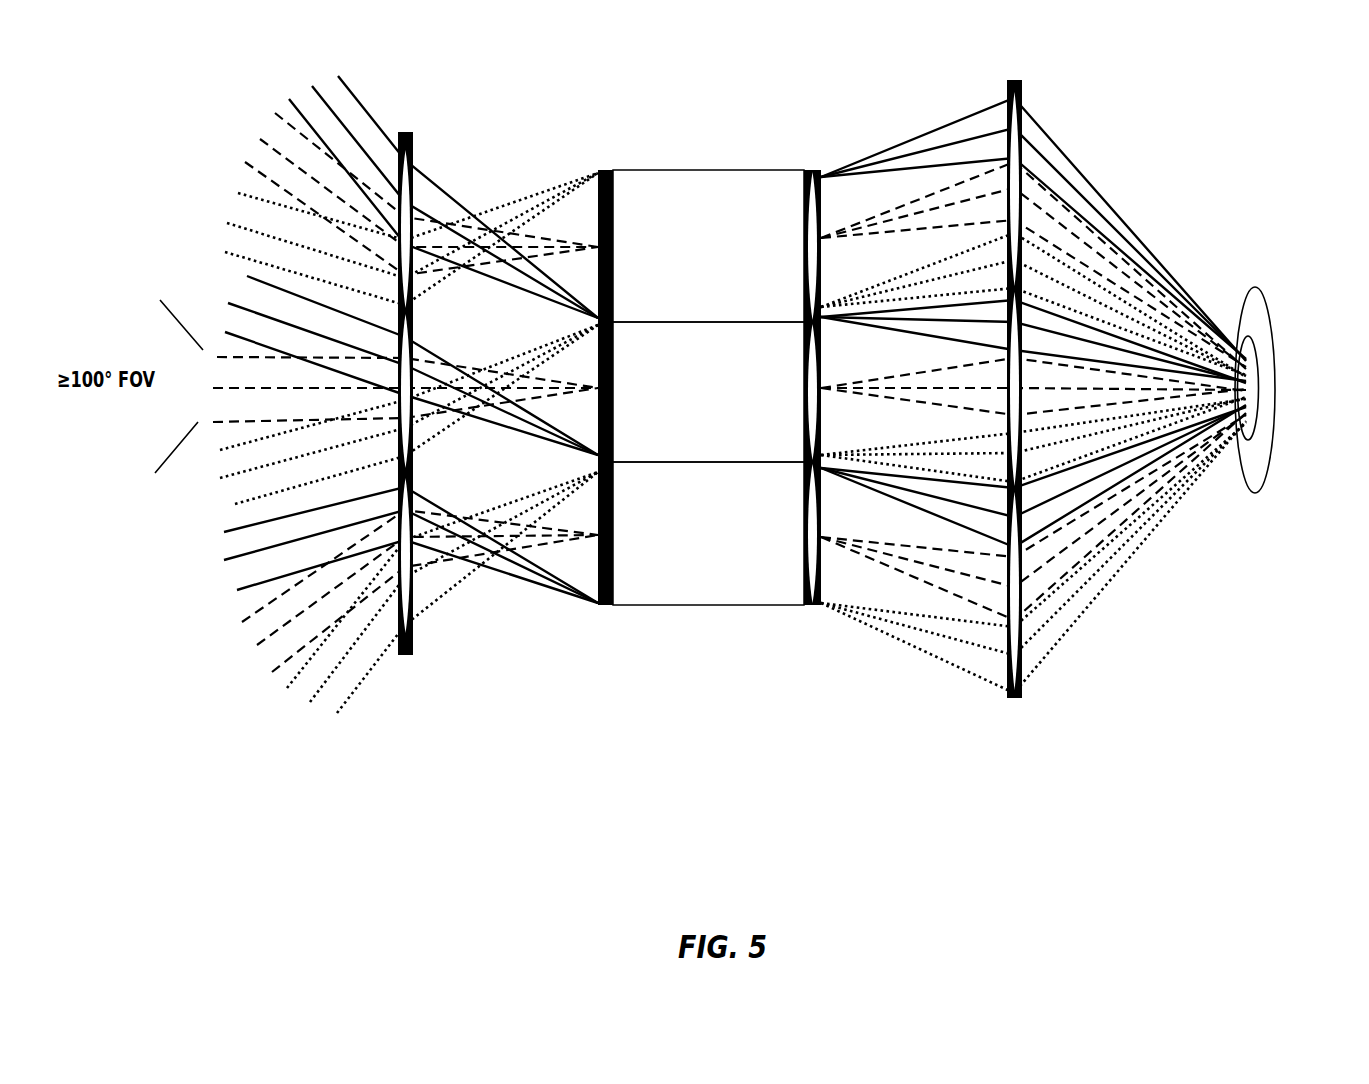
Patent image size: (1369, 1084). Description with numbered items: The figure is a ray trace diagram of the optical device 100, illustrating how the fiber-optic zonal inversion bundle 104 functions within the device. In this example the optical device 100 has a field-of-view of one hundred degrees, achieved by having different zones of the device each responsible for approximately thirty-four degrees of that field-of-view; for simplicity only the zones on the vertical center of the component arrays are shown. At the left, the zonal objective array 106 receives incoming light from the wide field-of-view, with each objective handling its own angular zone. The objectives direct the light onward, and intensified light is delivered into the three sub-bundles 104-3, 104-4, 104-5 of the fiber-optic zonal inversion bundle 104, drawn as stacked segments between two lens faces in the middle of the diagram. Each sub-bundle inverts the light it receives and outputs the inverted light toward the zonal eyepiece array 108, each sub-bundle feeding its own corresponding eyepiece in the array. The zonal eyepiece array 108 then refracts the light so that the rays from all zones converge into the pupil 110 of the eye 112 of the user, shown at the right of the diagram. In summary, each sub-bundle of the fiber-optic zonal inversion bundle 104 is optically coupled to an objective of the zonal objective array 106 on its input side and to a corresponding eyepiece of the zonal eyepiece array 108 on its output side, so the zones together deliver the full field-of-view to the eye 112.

The optical device 100 is at (1322, 128).
The fiber-optic zonal inversion bundle 104 is at (797, 116).
The sub-bundle 104-3 is at (708, 246).
The sub-bundle 104-4 is at (708, 392).
The sub-bundle 104-5 is at (708, 533).
The zonal objective array 106 is at (497, 96).
The zonal eyepiece array 108 is at (1064, 93).
The pupil 110 is at (1252, 397).
The eye 112 is at (1252, 322).